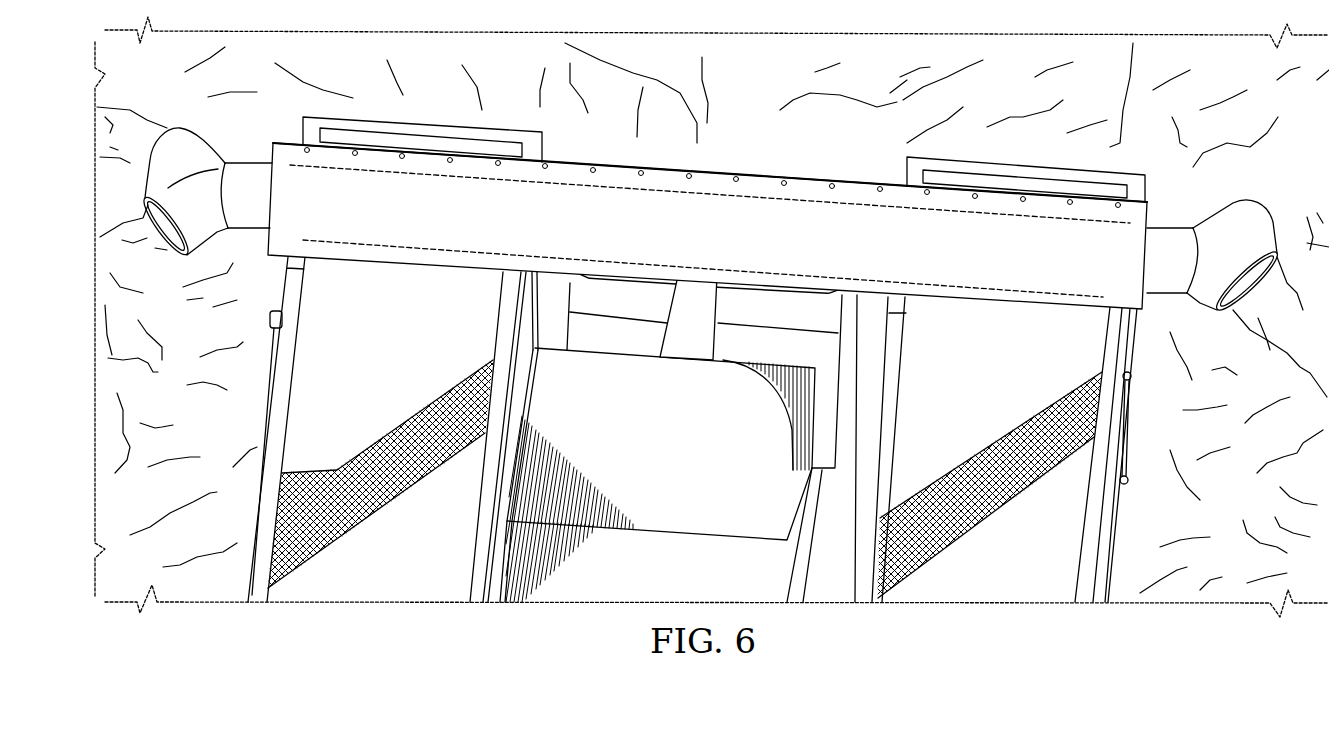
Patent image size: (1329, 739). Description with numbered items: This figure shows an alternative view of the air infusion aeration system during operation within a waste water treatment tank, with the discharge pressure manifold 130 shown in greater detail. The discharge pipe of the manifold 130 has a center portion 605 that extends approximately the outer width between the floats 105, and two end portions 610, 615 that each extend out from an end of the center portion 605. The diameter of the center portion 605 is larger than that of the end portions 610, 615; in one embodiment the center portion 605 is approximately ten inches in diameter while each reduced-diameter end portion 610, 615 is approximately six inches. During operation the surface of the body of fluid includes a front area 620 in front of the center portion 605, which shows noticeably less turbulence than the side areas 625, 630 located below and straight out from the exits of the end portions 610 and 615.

The floats 105 is at (302, 424).
The discharge pressure manifold 130 is at (370, 293).
The center portion 605 is at (772, 182).
The end portion 610 is at (253, 172).
The end portion 615 is at (1170, 234).
The front area 620 is at (750, 108).
The side area 625 is at (1275, 190).
The side area 630 is at (162, 104).